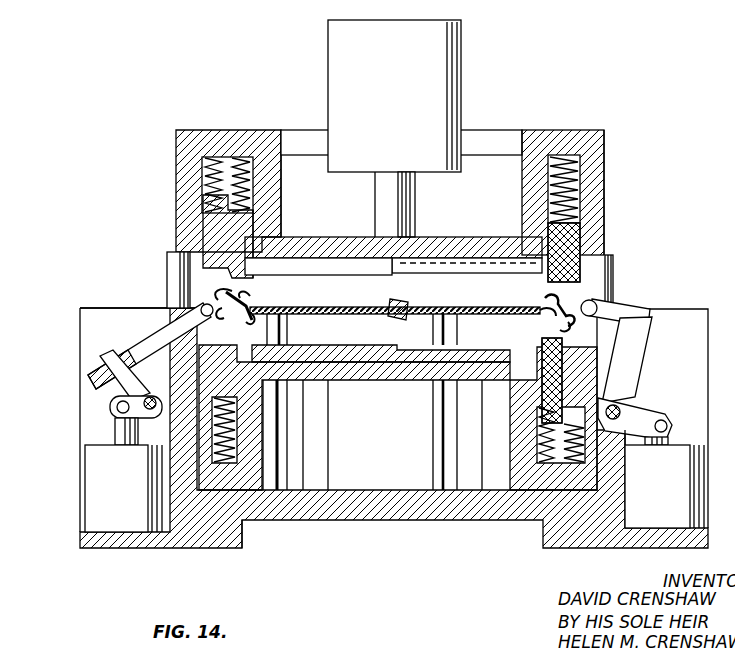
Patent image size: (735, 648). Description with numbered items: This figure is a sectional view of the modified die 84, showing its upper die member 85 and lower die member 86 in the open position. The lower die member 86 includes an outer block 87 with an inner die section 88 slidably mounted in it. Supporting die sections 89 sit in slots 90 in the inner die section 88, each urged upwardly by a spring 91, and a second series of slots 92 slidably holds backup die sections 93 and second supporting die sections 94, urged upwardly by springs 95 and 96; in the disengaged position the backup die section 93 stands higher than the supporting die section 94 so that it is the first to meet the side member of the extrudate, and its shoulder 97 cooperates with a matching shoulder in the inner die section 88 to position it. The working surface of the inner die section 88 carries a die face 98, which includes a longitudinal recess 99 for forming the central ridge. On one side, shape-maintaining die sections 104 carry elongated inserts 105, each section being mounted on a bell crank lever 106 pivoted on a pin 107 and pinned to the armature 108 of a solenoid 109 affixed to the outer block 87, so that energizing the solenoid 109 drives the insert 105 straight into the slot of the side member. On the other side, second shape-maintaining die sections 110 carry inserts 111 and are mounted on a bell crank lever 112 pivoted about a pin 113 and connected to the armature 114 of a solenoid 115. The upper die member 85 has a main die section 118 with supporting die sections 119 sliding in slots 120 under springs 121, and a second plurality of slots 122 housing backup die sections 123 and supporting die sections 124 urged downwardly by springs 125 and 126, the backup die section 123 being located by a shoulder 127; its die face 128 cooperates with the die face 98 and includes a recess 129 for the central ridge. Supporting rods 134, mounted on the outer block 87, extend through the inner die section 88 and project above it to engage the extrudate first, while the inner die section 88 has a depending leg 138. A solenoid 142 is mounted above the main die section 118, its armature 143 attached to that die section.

The die 84 is at (528, 107).
The upper die member 85 is at (605, 184).
The lower die member 86 is at (124, 305).
The outer block 87 is at (512, 518).
The inner die section 88 is at (366, 382).
The supporting die sections 89 is at (240, 326).
The slots 90 is at (238, 426).
The spring 91 is at (238, 462).
The second series of slots 92 is at (540, 430).
The backup die sections 93 is at (546, 396).
The second supporting die sections 94 is at (614, 394).
The spring 95 is at (566, 452).
The spring 96 is at (627, 462).
The shoulder 97 is at (546, 310).
The die face 98 is at (424, 322).
The longitudinal recess 99 is at (396, 346).
The shape-maintaining die sections 104 is at (198, 302).
The elongated inserts 105 is at (188, 264).
The bell crank lever 106 is at (120, 394).
The pin 107 is at (132, 412).
The armature 108 is at (122, 432).
The solenoid 109 is at (123, 488).
The second shape-maintaining die sections 110 is at (626, 306).
The elongated inserts 111 is at (613, 286).
The bell crank lever 112 is at (636, 358).
The pin 113 is at (622, 412).
The armature 114 is at (680, 442).
The solenoid 115 is at (664, 486).
The main die section 118 is at (279, 136).
The supporting die sections 119 is at (582, 236).
The slots 120 is at (580, 202).
The springs 121 is at (604, 152).
The second plurality of slots 122 is at (254, 200).
The backup die sections 123 is at (252, 228).
The supporting die sections 124 is at (207, 200).
The spring 125 is at (238, 157).
The spring 126 is at (208, 157).
The shoulder 127 is at (296, 246).
The die face 128 is at (332, 276).
The recess 129 is at (402, 274).
The supporting rods 134 is at (440, 444).
The depending leg 138 is at (450, 476).
The solenoid 142 is at (394, 96).
The armature 143 is at (416, 202).